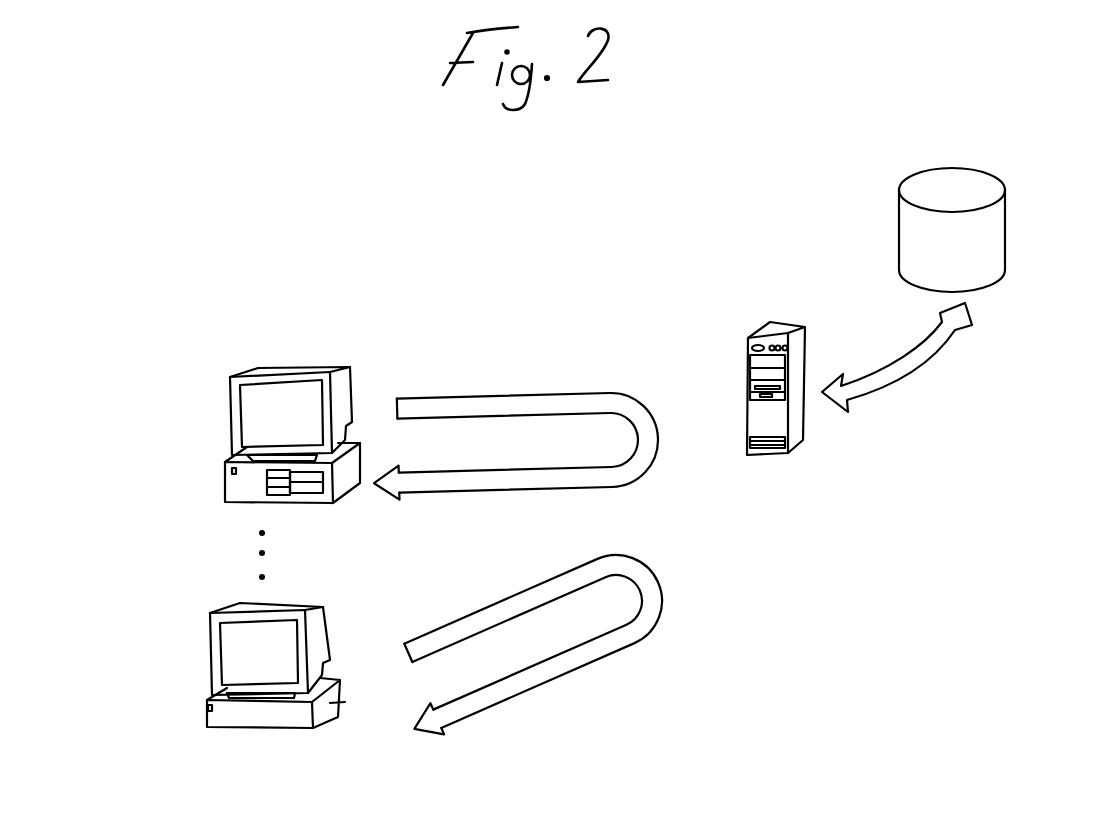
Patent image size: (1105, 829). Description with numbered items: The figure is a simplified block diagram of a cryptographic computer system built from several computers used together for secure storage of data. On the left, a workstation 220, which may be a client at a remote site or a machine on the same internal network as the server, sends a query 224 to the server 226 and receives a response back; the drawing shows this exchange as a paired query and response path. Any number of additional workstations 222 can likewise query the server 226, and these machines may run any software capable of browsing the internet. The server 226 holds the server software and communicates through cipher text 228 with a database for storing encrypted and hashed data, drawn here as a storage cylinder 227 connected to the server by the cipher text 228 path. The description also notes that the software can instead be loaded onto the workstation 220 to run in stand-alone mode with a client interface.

The workstation 220 is at (227, 377).
The additional workstation 222 is at (207, 635).
The query 224 is at (498, 325).
The server 226 is at (803, 441).
The database 227 is at (950, 167).
The cipher text 228 is at (960, 353).